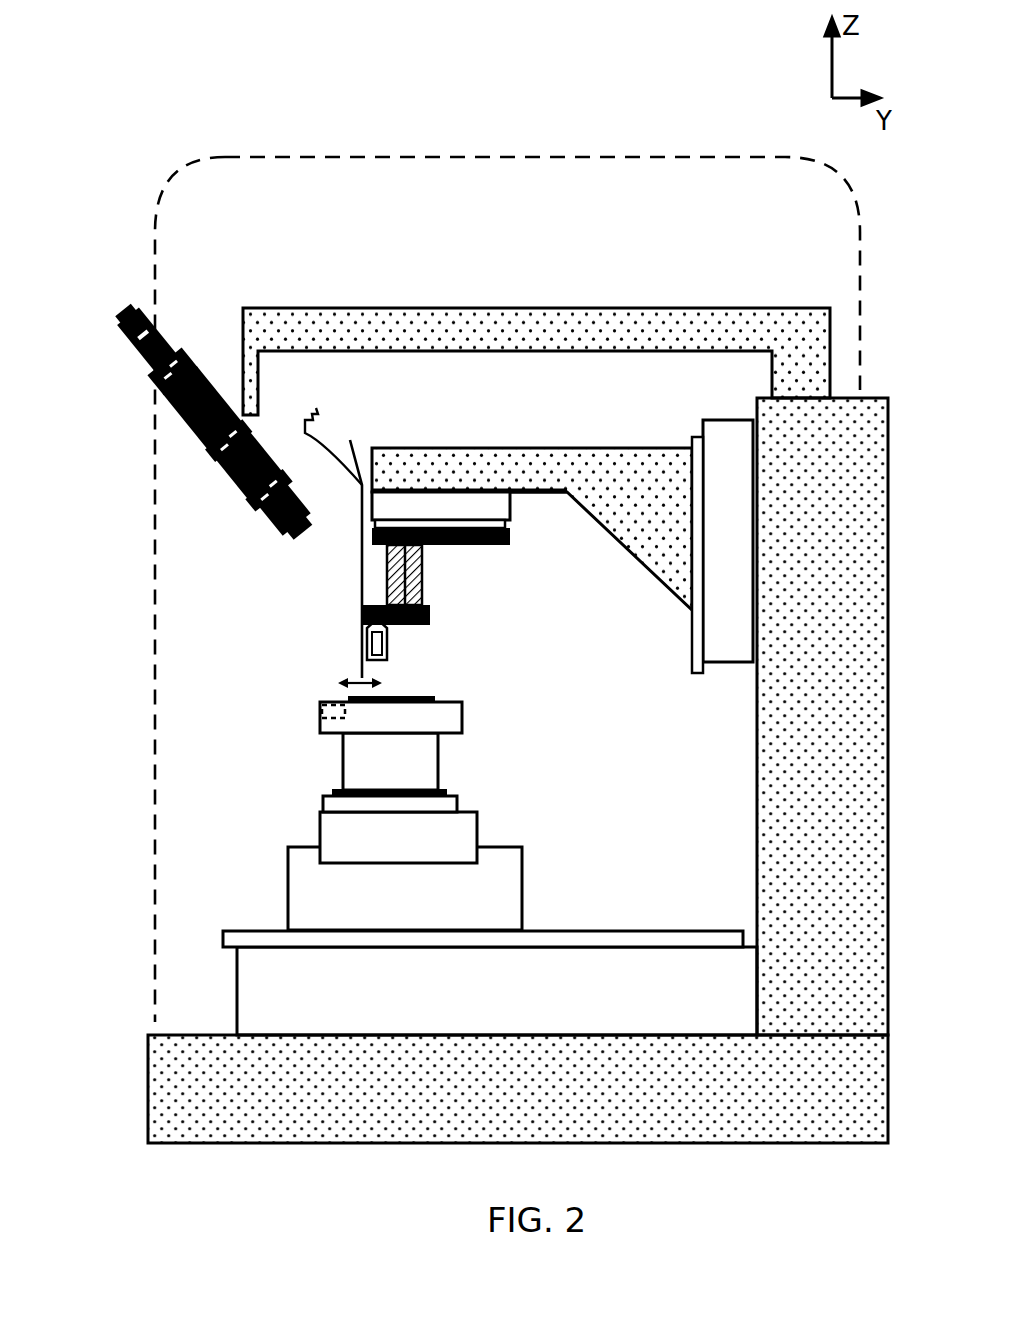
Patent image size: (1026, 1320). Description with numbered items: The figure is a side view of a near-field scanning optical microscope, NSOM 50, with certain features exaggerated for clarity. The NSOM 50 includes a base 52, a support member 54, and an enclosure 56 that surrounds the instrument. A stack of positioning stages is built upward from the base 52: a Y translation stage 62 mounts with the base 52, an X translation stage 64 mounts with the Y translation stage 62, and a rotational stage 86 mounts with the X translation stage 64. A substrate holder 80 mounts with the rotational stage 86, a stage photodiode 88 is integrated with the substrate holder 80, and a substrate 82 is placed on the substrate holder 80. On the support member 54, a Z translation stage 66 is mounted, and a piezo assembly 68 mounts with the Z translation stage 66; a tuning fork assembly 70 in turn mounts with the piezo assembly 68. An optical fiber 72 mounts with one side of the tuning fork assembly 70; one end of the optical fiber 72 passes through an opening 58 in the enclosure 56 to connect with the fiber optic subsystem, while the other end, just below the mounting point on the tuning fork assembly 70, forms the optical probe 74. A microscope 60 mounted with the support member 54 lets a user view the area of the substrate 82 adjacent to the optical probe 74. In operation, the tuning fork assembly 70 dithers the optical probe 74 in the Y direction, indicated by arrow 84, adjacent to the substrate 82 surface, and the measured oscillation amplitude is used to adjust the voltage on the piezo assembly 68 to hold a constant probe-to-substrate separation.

The NSOM 50 is at (425, 110).
The base 52 is at (185, 1060).
The support member 54 is at (840, 552).
The enclosure 56 is at (618, 155).
The opening 58 is at (316, 408).
The microscope 60 is at (217, 472).
The Y translation stage 62 is at (460, 897).
The X translation stage 64 is at (343, 826).
The Z translation stage 66 is at (723, 443).
The piezo assembly 68 is at (387, 582).
The tuning fork assembly 70 is at (362, 636).
The optical fiber 72 is at (350, 440).
The optical probe 74 is at (362, 668).
The substrate holder 80 is at (427, 715).
The substrate 82 is at (417, 697).
The arrow 84 is at (385, 683).
The rotational stage 86 is at (377, 758).
The stage photodiode 88 is at (320, 710).